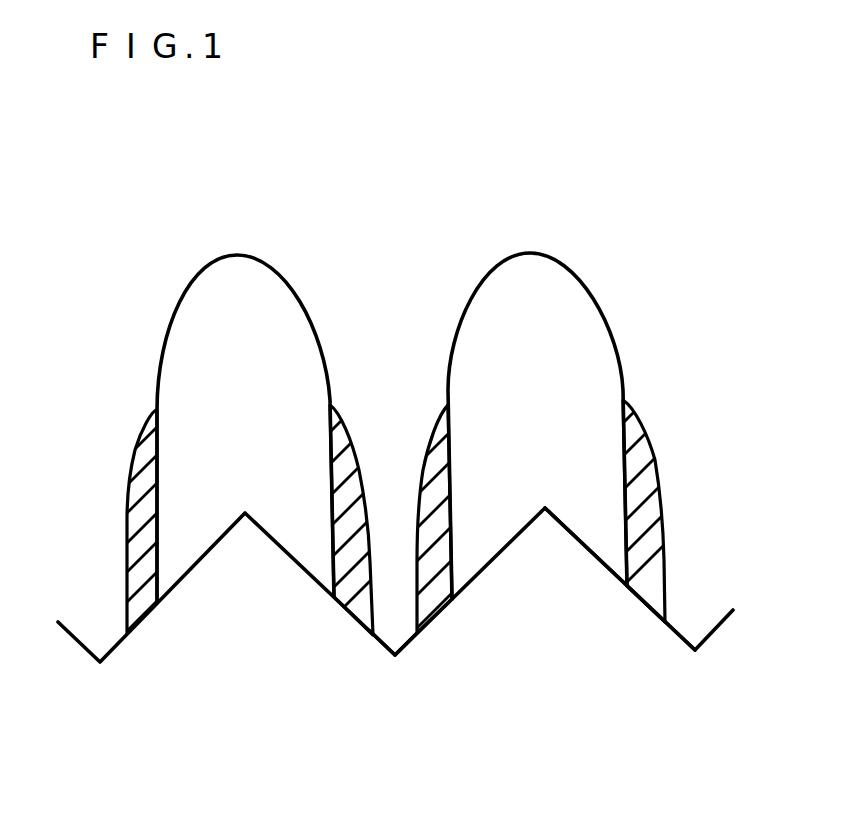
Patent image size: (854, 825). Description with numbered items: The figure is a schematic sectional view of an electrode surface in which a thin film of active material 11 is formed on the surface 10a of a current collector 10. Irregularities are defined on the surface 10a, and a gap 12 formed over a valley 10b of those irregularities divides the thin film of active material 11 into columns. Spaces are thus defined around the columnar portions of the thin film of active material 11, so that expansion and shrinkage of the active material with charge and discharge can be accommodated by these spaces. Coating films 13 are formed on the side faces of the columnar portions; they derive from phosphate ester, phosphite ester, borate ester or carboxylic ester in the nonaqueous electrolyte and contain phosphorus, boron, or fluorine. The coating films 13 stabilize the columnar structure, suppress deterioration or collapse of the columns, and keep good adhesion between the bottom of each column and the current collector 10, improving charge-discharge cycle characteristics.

The current collector 10 is at (665, 648).
The surface of current collector 10a is at (587, 545).
The valley of irregularities 10b is at (395, 653).
The thin film of active material 11 is at (242, 280).
The gap 12 is at (384, 435).
The coating film 13 is at (440, 446).